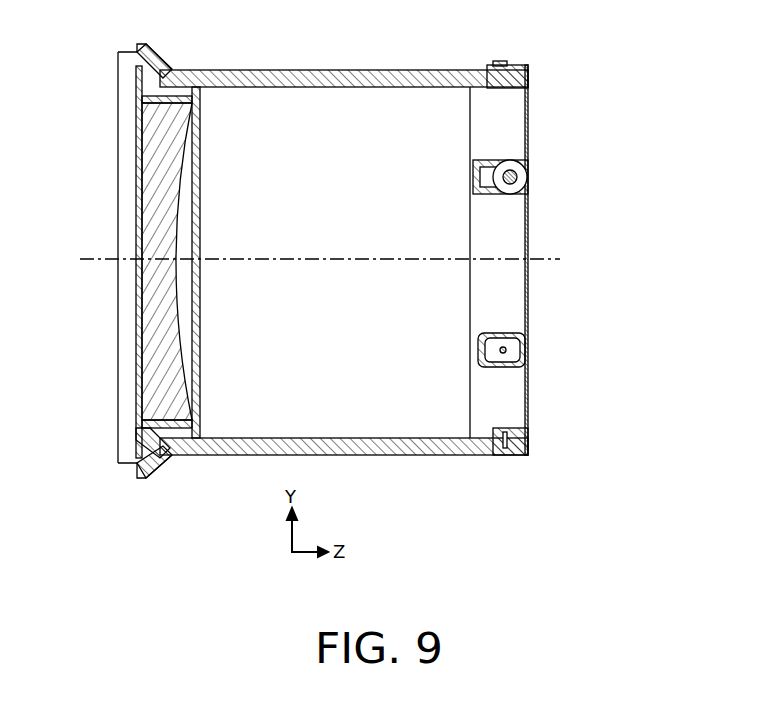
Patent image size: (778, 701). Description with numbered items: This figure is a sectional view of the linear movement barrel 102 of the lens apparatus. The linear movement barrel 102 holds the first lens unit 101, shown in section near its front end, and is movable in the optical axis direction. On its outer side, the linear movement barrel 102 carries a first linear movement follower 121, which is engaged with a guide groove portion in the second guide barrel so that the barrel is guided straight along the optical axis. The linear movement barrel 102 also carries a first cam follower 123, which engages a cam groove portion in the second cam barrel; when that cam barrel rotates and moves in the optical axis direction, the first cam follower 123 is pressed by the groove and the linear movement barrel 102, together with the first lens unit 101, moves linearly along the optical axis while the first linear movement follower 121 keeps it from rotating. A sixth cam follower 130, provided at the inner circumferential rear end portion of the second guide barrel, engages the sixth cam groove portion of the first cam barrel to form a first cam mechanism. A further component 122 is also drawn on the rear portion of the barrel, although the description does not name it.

The first lens unit 101 is at (116, 261).
The linear movement barrel 102 is at (323, 248).
The first linear movement follower 121 is at (455, 51).
The rear cover plate 122 is at (564, 260).
The sixth cam follower 130 is at (530, 173).
The first cam follower 123 is at (597, 394).